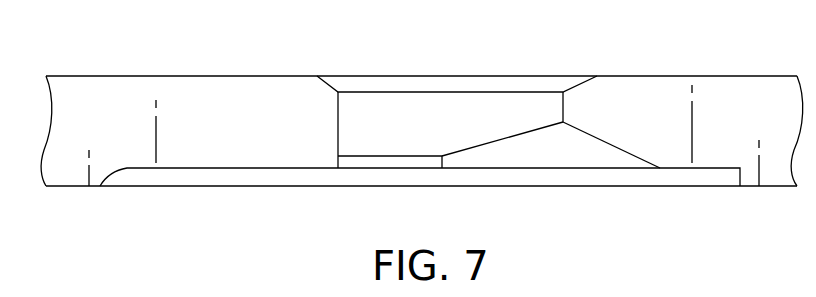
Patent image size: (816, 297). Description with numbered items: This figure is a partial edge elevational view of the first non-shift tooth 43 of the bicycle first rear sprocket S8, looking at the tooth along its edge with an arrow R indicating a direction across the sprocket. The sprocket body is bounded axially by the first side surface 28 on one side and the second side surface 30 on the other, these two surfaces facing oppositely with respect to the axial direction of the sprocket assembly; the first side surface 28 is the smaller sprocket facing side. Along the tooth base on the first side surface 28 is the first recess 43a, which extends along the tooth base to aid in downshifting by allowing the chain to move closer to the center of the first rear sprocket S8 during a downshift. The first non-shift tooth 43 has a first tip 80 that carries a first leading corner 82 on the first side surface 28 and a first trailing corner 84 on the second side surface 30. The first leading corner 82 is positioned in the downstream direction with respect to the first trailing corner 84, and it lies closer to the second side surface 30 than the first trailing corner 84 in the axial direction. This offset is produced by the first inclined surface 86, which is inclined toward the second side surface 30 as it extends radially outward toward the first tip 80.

The first side surface 28 is at (625, 188).
The second side surface 30 is at (642, 76).
The first non-shift tooth 43 is at (493, 68).
The first recess 43a is at (262, 168).
The first tip 80 is at (412, 118).
The first leading corner 82 is at (564, 124).
The first trailing corner 84 is at (341, 157).
The first inclined surface 86 is at (510, 149).
The first rear sprocket S8 is at (166, 46).
The direction R is at (355, 51).